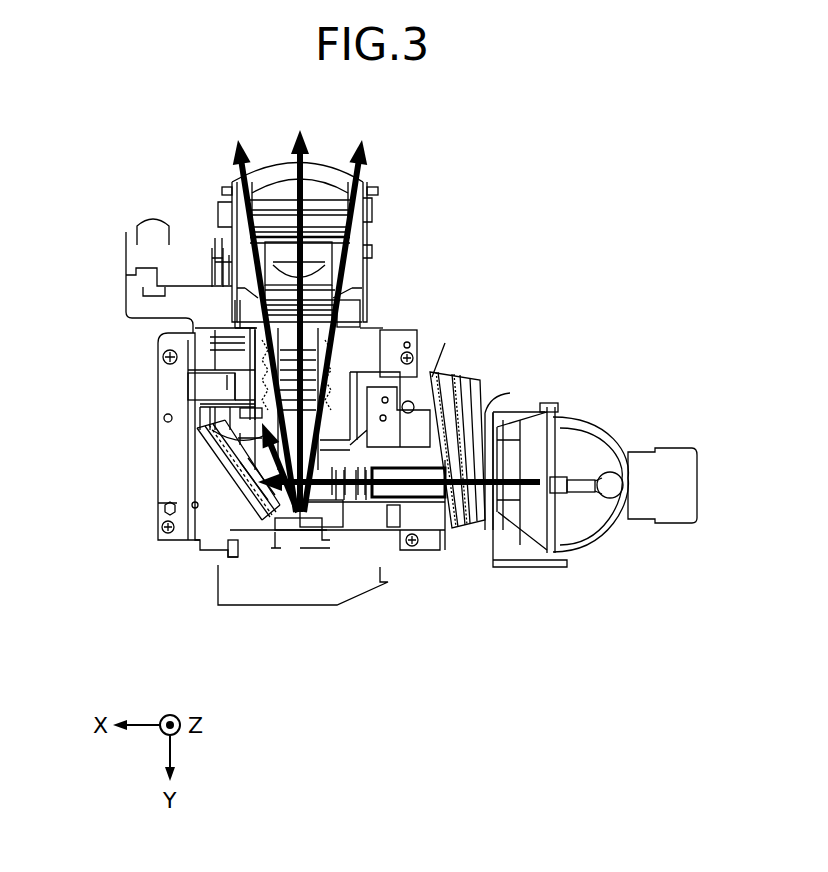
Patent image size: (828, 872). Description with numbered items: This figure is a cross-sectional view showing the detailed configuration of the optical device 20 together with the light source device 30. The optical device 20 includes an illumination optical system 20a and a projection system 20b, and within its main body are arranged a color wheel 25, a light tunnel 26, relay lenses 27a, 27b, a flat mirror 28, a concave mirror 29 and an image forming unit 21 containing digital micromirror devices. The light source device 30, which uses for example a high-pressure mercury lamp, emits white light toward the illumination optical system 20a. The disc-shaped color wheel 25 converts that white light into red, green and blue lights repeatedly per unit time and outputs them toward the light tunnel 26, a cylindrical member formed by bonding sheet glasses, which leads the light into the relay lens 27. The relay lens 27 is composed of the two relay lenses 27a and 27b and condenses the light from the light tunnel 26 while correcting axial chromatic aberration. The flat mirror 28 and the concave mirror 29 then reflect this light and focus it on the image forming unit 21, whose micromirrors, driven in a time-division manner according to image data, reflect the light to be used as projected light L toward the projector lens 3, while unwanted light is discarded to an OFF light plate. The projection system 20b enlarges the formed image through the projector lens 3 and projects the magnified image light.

The projector lens 3 is at (338, 167).
The optical device 20 is at (108, 230).
The illumination optical system 20a is at (111, 315).
The projection system 20b is at (387, 222).
The image forming unit 21 is at (296, 522).
The color wheel 25 is at (482, 406).
The light tunnel 26 is at (418, 498).
The relay lens 27 is at (440, 648).
The relay lens 27a is at (362, 497).
The relay lens 27b is at (340, 497).
The flat mirror 28 is at (280, 475).
The concave mirror 29 is at (212, 430).
The light source device 30 is at (616, 550).
The projected light L is at (516, 500).